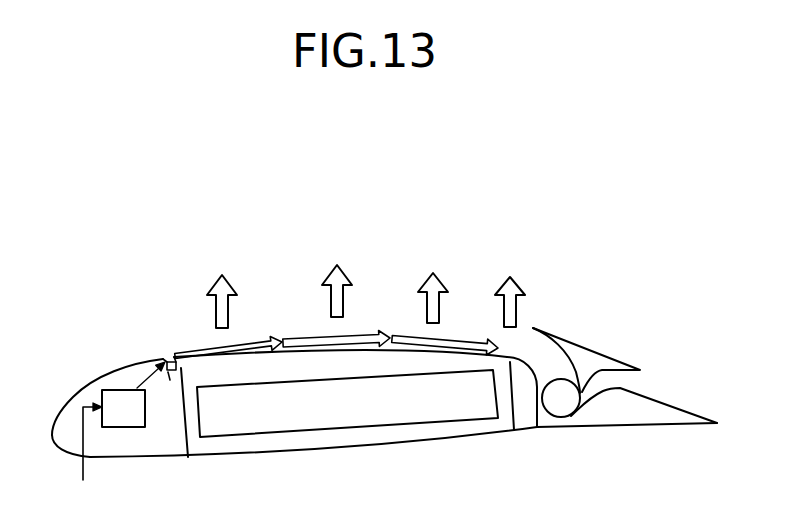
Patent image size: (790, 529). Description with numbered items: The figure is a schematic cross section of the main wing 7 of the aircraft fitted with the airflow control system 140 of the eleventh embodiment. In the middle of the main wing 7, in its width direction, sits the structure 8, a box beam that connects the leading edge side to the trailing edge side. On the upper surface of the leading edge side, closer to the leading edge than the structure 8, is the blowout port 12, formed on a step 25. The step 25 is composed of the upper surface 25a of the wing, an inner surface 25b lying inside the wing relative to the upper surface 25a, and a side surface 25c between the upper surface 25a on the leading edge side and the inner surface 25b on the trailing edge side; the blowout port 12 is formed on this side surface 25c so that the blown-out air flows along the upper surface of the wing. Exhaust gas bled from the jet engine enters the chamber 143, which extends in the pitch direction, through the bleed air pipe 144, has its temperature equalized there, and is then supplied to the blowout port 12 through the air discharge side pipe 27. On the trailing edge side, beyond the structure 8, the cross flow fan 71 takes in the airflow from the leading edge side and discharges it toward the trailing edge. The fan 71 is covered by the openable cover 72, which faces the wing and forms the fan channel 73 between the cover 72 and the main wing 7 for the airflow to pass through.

The main wing 7 is at (500, 192).
The airflow control system 140 is at (631, 350).
The cover 72 is at (600, 343).
The fan channel 73 is at (620, 380).
The fan 71 is at (567, 408).
The structure 8 is at (315, 437).
The blowout port 12 is at (165, 360).
The step 25 is at (152, 331).
The upper surface 25a is at (137, 358).
The inner surface 25b is at (175, 357).
The side surface 25c is at (168, 372).
The chamber 143 is at (112, 390).
The air discharge side pipe 27 is at (130, 390).
The bleed air pipe 144 is at (83, 460).